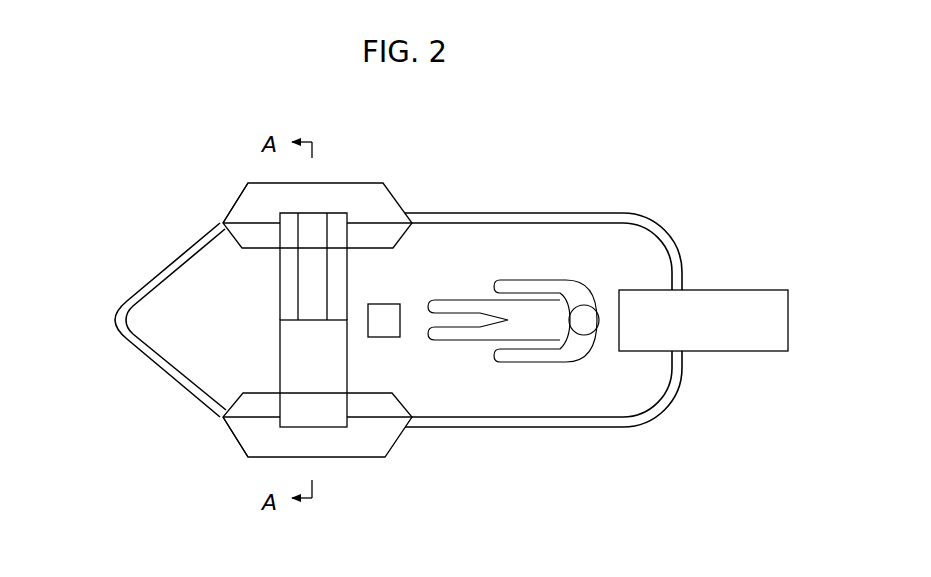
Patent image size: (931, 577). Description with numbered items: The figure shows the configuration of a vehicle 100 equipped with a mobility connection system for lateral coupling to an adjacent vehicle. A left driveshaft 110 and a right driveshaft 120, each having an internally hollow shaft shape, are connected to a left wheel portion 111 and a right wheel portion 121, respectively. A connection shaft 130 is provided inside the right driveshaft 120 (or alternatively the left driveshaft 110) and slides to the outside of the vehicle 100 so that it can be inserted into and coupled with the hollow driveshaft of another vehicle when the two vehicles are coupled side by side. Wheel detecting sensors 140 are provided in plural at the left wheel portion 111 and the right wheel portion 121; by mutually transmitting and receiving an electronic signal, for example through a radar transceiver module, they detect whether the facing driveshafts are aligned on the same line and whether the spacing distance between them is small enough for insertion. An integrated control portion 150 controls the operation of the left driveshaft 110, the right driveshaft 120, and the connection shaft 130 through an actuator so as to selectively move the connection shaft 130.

The vehicle 100 is at (592, 212).
The left driveshaft 110 is at (288, 372).
The left wheel portion 111 is at (257, 447).
The right driveshaft 120 is at (288, 268).
The right wheel portion 121 is at (257, 192).
The connection shaft 130 is at (312, 298).
The wheel detecting sensor 140 is at (362, 178).
The integrated control portion 150 is at (397, 323).